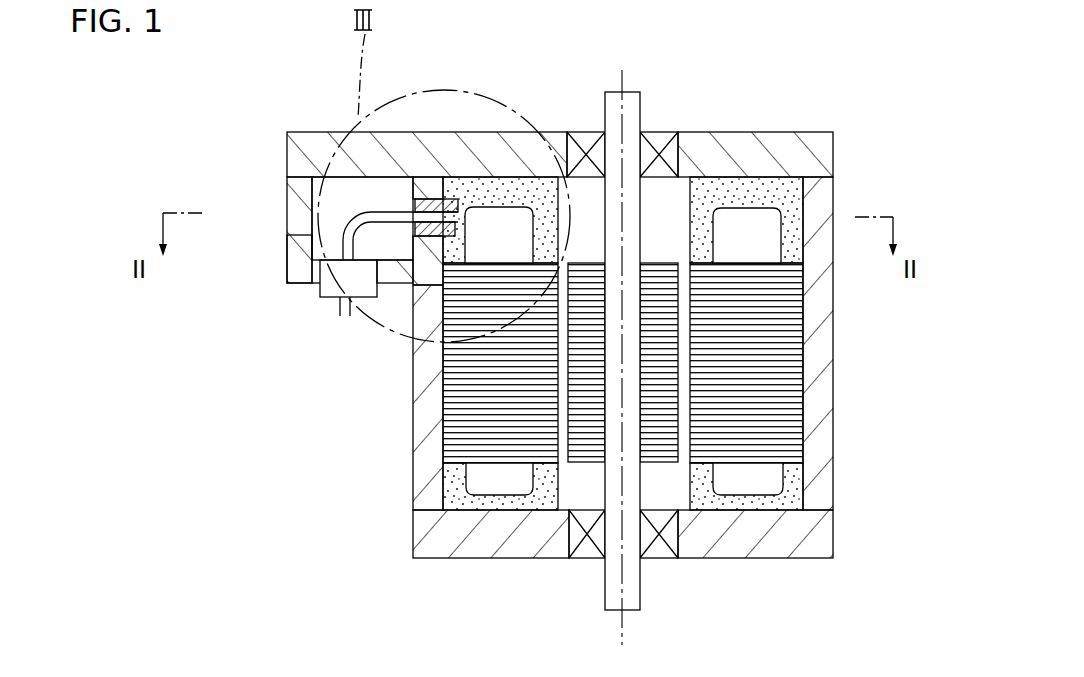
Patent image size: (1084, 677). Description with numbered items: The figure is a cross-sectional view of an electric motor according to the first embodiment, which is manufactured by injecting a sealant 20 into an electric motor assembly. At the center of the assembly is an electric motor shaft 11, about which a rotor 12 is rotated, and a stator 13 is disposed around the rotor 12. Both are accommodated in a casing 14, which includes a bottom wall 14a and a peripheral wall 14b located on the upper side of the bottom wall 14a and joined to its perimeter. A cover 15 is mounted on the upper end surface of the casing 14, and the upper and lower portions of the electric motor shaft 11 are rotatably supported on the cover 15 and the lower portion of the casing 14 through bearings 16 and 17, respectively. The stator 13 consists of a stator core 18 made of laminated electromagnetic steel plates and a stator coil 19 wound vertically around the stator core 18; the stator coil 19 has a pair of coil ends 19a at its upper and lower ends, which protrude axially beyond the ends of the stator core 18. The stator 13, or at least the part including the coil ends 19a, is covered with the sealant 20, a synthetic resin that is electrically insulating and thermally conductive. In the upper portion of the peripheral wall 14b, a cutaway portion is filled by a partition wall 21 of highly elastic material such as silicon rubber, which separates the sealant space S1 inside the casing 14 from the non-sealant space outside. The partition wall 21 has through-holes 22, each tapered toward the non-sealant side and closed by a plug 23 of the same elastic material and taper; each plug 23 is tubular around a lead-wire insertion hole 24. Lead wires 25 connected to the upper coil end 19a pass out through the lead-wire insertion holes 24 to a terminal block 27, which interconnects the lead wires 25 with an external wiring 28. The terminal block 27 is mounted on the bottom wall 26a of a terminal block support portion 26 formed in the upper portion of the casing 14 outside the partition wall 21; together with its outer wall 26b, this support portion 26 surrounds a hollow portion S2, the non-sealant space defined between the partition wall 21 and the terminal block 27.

The electric motor shaft 11 is at (611, 92).
The rotor 12 is at (657, 262).
The stator 13 is at (560, 352).
The casing 14 is at (675, 395).
The bottom wall 14a is at (742, 552).
The peripheral wall 14b is at (826, 332).
The cover 15 is at (546, 132).
The bearing 16 is at (662, 132).
The bearing 17 is at (583, 560).
The stator core 18 is at (432, 368).
The stator coil 19 is at (468, 413).
The coil ends 19a is at (742, 215).
The sealant 20 is at (446, 478).
The partition wall 21 is at (403, 164).
The through-holes 22 is at (440, 204).
The plugs 23 is at (458, 222).
The lead-wire insertion hole 24 is at (412, 230).
The lead wires 25 is at (289, 191).
The terminal block support portion 26 is at (306, 273).
The bottom wall 26a is at (408, 263).
The outer wall 26b is at (288, 258).
The terminal block 27 is at (327, 298).
The external wiring 28 is at (338, 311).
The sealant space S1 is at (482, 175).
The hollow portion S2 is at (357, 192).